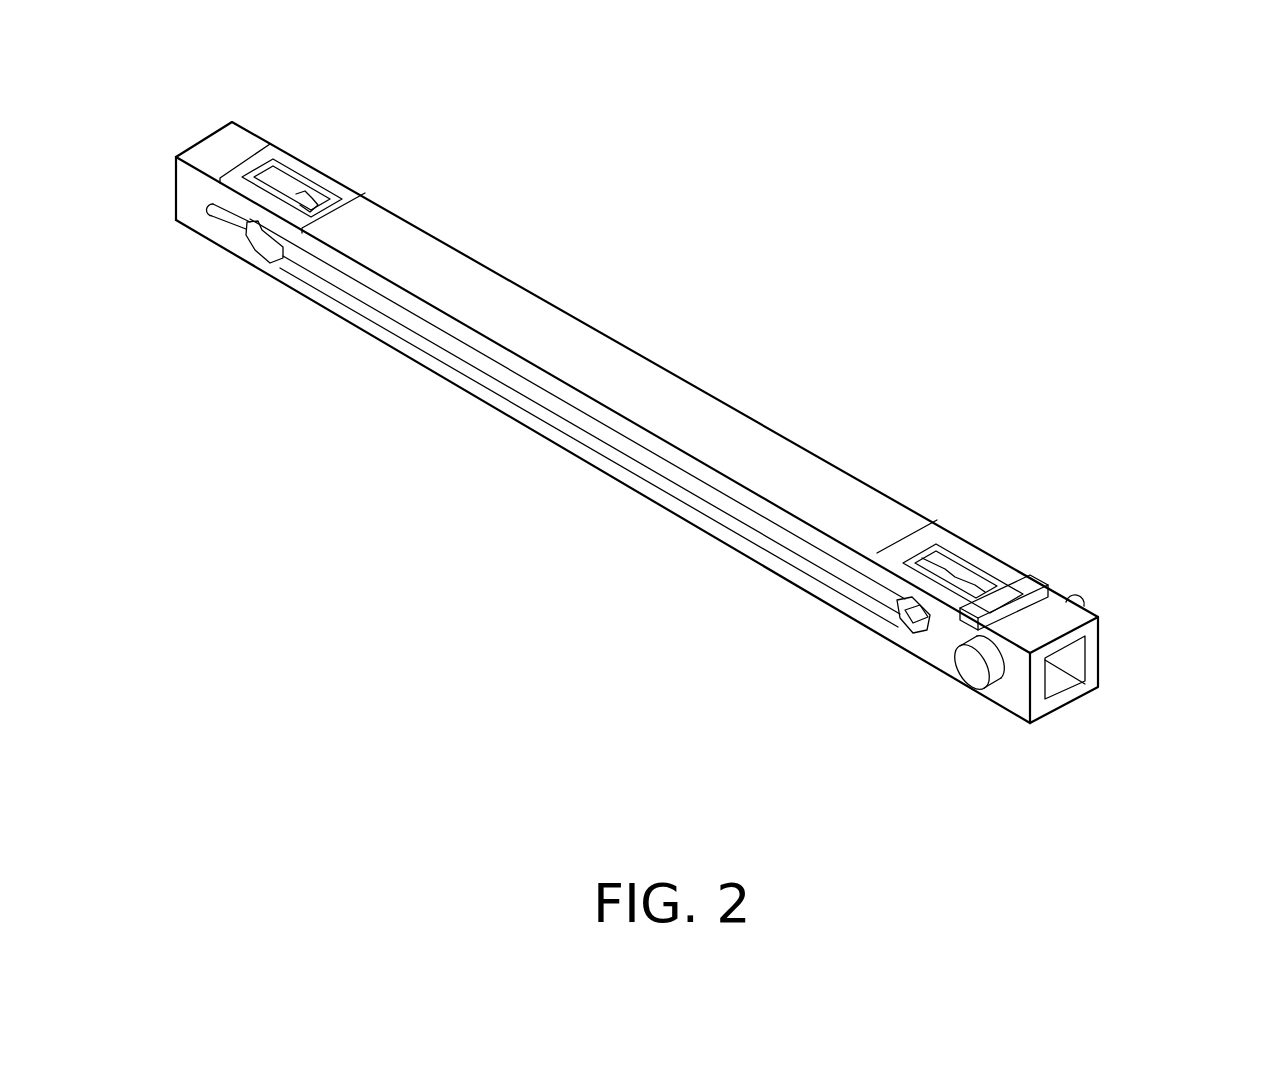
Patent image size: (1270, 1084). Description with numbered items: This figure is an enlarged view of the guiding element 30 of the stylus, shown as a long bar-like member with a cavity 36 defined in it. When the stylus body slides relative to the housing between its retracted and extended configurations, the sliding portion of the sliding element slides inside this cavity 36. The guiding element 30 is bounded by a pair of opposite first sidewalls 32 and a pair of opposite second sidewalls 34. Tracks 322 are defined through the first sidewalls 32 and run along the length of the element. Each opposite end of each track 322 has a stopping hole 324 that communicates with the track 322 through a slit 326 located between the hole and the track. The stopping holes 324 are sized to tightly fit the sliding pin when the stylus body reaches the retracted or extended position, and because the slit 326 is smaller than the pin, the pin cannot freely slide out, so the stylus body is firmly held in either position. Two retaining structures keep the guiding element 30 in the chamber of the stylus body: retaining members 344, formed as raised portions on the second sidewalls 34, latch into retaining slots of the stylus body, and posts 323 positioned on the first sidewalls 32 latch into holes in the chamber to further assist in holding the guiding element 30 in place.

The guiding element 30 is at (710, 243).
The first sidewalls 32 is at (417, 350).
The second sidewalls 34 is at (703, 400).
The cavity 36 is at (1063, 683).
The tracks 322 is at (528, 397).
The posts 323 is at (975, 685).
The stopping holes 324 is at (258, 248).
The slit 326 is at (907, 630).
The retaining members 344 is at (1030, 592).